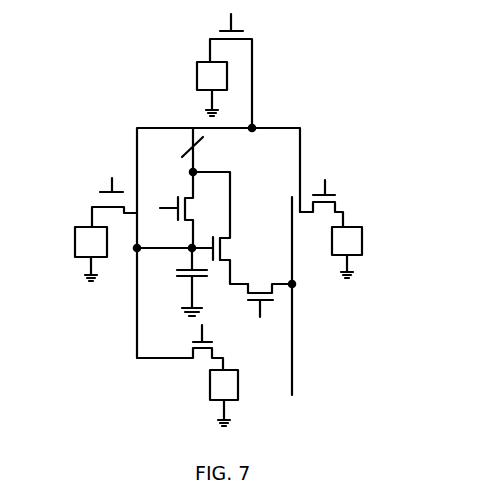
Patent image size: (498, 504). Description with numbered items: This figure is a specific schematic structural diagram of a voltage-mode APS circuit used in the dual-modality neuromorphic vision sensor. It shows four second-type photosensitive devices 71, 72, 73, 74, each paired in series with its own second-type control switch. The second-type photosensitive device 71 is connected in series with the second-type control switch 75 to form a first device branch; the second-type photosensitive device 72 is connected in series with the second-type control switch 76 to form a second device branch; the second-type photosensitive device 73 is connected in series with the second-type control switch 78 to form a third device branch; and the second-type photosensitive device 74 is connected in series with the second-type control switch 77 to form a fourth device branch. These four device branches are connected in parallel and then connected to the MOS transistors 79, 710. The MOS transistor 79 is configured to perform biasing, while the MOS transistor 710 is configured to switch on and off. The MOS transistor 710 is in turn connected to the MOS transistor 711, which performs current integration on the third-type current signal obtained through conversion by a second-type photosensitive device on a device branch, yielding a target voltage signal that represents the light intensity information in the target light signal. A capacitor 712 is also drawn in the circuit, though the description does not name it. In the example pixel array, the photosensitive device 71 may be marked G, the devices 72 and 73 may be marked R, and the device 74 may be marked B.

The second-type photosensitive device 71 is at (197, 67).
The second-type photosensitive device 72 is at (107, 242).
The second-type photosensitive device 73 is at (332, 245).
The second-type photosensitive device 74 is at (238, 385).
The second-type control switch 75 is at (240, 19).
The second-type control switch 76 is at (103, 185).
The second-type control switch 77 is at (220, 335).
The second-type control switch 78 is at (340, 192).
The MOS transistor 79 is at (177, 192).
The MOS transistor 710 is at (230, 248).
The MOS transistor 711 is at (260, 278).
The capacitor 712 is at (170, 277).